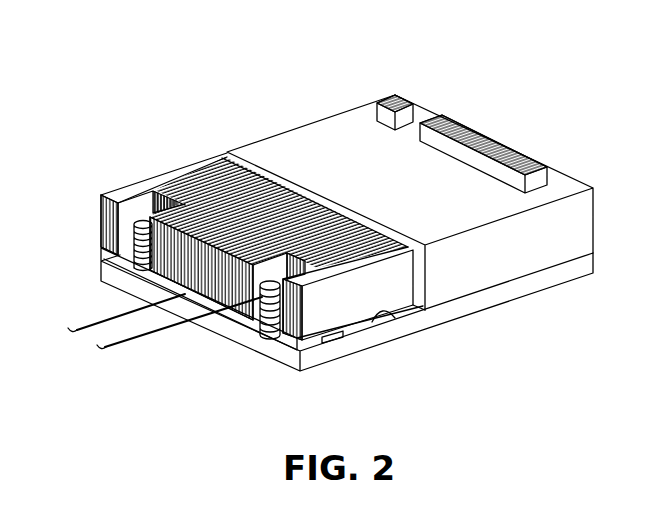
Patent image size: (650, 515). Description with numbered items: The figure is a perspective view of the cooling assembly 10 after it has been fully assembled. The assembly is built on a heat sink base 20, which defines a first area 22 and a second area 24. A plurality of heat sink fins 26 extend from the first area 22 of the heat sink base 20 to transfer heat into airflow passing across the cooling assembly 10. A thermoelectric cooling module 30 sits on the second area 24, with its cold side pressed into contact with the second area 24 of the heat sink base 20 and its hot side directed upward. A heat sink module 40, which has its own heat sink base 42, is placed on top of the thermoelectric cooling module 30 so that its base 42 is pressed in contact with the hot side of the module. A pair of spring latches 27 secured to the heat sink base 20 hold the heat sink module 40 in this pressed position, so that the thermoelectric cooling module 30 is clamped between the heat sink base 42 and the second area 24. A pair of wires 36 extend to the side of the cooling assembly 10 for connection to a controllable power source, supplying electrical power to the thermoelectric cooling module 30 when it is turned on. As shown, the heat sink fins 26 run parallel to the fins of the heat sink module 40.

The cooling assembly 10 is at (150, 82).
The heat sink base 20 is at (490, 308).
The first area 22 is at (513, 264).
The second area 24 is at (398, 320).
The heat sink fins 26 is at (500, 152).
The spring latches 27 is at (133, 245).
The thermoelectric cooling module 30 is at (410, 316).
The wires 36 is at (113, 317).
The heat sink module 40 is at (148, 180).
The heat sink base 42 is at (308, 340).